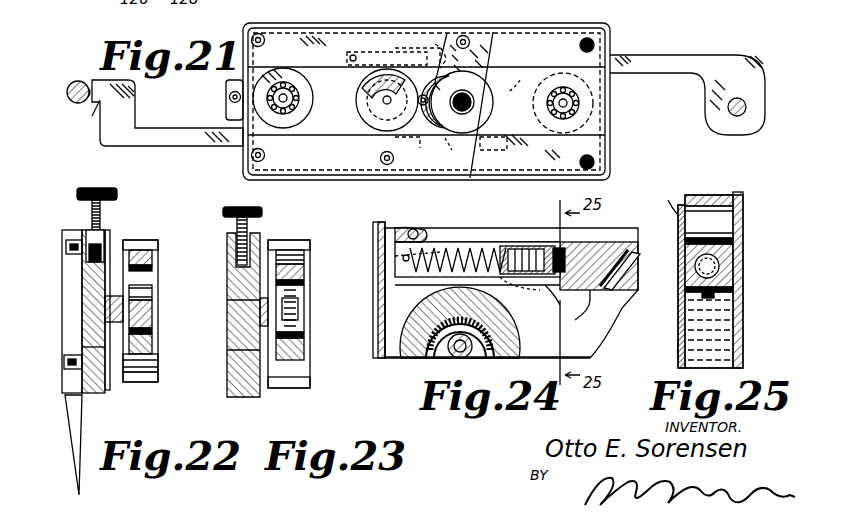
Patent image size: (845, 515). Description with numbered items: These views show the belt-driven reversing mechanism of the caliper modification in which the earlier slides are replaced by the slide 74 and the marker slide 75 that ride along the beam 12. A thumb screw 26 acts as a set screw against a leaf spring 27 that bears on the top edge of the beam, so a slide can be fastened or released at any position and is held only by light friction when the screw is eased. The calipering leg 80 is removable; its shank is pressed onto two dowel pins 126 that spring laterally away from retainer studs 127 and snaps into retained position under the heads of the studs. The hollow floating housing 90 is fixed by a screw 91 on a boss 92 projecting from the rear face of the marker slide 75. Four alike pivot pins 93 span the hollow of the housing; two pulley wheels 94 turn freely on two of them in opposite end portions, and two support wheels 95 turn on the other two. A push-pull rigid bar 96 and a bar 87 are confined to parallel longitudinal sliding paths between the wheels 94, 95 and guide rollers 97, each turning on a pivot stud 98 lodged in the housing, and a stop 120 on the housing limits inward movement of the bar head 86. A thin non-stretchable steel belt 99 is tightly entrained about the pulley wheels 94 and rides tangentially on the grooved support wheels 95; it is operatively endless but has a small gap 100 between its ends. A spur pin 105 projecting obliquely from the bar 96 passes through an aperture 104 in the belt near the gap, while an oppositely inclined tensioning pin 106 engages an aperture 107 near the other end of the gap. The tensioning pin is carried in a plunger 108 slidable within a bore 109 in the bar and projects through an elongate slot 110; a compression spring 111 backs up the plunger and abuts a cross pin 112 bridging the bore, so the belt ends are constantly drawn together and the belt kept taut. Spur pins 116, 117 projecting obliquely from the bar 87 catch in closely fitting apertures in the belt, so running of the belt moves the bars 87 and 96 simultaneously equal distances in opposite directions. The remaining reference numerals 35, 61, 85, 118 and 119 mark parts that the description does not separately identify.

In FIG. 22, the beam 12 is at (90, 283).
In FIG. 23, the beam 12 is at (228, 340).
In FIG. 22, the thumb screw 26 is at (80, 188).
In FIG. 22, the leaf spring 27 is at (105, 230).
In FIG. 23, the leaf spring 27 is at (235, 262).
In FIG. 23, the adjusting knob 35 is at (228, 208).
In FIG. 21, the pivot hole 61 is at (746, 107).
In FIG. 22, the slide 74 is at (93, 395).
In FIG. 23, the marker slide 75 is at (238, 398).
In FIG. 22, the calipering leg 80 is at (62, 299).
In FIG. 21, the pivot hub 85 is at (76, 82).
In FIG. 22, the pivot hub 85 is at (112, 296).
In FIG. 21, the bar head 86 is at (90, 112).
In FIG. 21, the bar 87 is at (178, 136).
In FIG. 22, the bar 87 is at (158, 350).
In FIG. 23, the bar 87 is at (310, 356).
In FIG. 21, the housing 90 is at (345, 20).
In FIG. 22, the housing 90 is at (152, 242).
In FIG. 23, the housing 90 is at (290, 244).
In FIG. 21, the screw 91 is at (423, 106).
In FIG. 23, the boss 92 is at (264, 298).
In FIG. 21, the pivot pins 93 is at (288, 95).
In FIG. 22, the pivot pins 93 is at (145, 310).
In FIG. 24, the pivot pins 93 is at (475, 340).
In FIG. 25, the pivot pins 93 is at (678, 347).
In FIG. 21, the pulley wheels 94 is at (280, 78).
In FIG. 24, the pulley wheels 94 is at (400, 358).
In FIG. 25, the pulley wheels 94 is at (720, 305).
In FIG. 21, the support wheels 95 is at (366, 100).
In FIG. 23, the support wheels 95 is at (300, 300).
In FIG. 21, the push-pull rigid bar 96 is at (452, 38).
In FIG. 22, the push-pull rigid bar 96 is at (158, 262).
In FIG. 23, the push-pull rigid bar 96 is at (310, 265).
In FIG. 24, the push-pull rigid bar 96 is at (612, 248).
In FIG. 25, the push-pull rigid bar 96 is at (746, 250).
In FIG. 21, the guide rollers 97 is at (259, 36).
In FIG. 22, the guide rollers 97 is at (145, 240).
In FIG. 23, the guide rollers 97 is at (305, 250).
In FIG. 24, the guide rollers 97 is at (425, 226).
In FIG. 25, the guide rollers 97 is at (722, 222).
In FIG. 21, the pivot stud 98 is at (262, 35).
In FIG. 22, the pivot stud 98 is at (128, 383).
In FIG. 23, the pivot stud 98 is at (277, 250).
In FIG. 24, the pivot stud 98 is at (412, 229).
In FIG. 25, the pivot stud 98 is at (664, 199).
In FIG. 21, the belt 99 is at (270, 62).
In FIG. 22, the belt 99 is at (158, 270).
In FIG. 23, the belt 99 is at (310, 283).
In FIG. 24, the belt 99 is at (404, 320).
In FIG. 25, the belt 99 is at (733, 290).
In FIG. 24, the gap 100 is at (581, 309).
In FIG. 24, the aperture 104 is at (615, 290).
In FIG. 21, the spur pin 105 is at (452, 32).
In FIG. 24, the spur pin 105 is at (635, 248).
In FIG. 21, the tensioning pin 106 is at (430, 58).
In FIG. 24, the tensioning pin 106 is at (510, 318).
In FIG. 25, the tensioning pin 106 is at (705, 300).
In FIG. 24, the aperture 107 is at (548, 296).
In FIG. 21, the plunger 108 is at (386, 49).
In FIG. 24, the plunger 108 is at (528, 245).
In FIG. 25, the plunger 108 is at (735, 255).
In FIG. 24, the bore 109 is at (378, 232).
In FIG. 25, the bore 109 is at (720, 268).
In FIG. 21, the elongate slot 110 is at (283, 106).
In FIG. 24, the elongate slot 110 is at (500, 280).
In FIG. 24, the compression spring 111 is at (455, 245).
In FIG. 21, the cross pin 112 is at (347, 57).
In FIG. 24, the cross pin 112 is at (402, 260).
In FIG. 21, the spur pin 116 is at (395, 137).
In FIG. 21, the spur pin 117 is at (448, 152).
In FIG. 21, the bearing 118 is at (580, 120).
In FIG. 22, the bearing 118 is at (158, 298).
In FIG. 24, the bearing 118 is at (450, 346).
In FIG. 21, the cam 119 is at (370, 85).
In FIG. 23, the cam 119 is at (300, 314).
In FIG. 21, the stop 120 is at (226, 97).
In FIG. 22, the dowel pins 126 is at (62, 244).
In FIG. 22, the retainer studs 127 is at (72, 240).